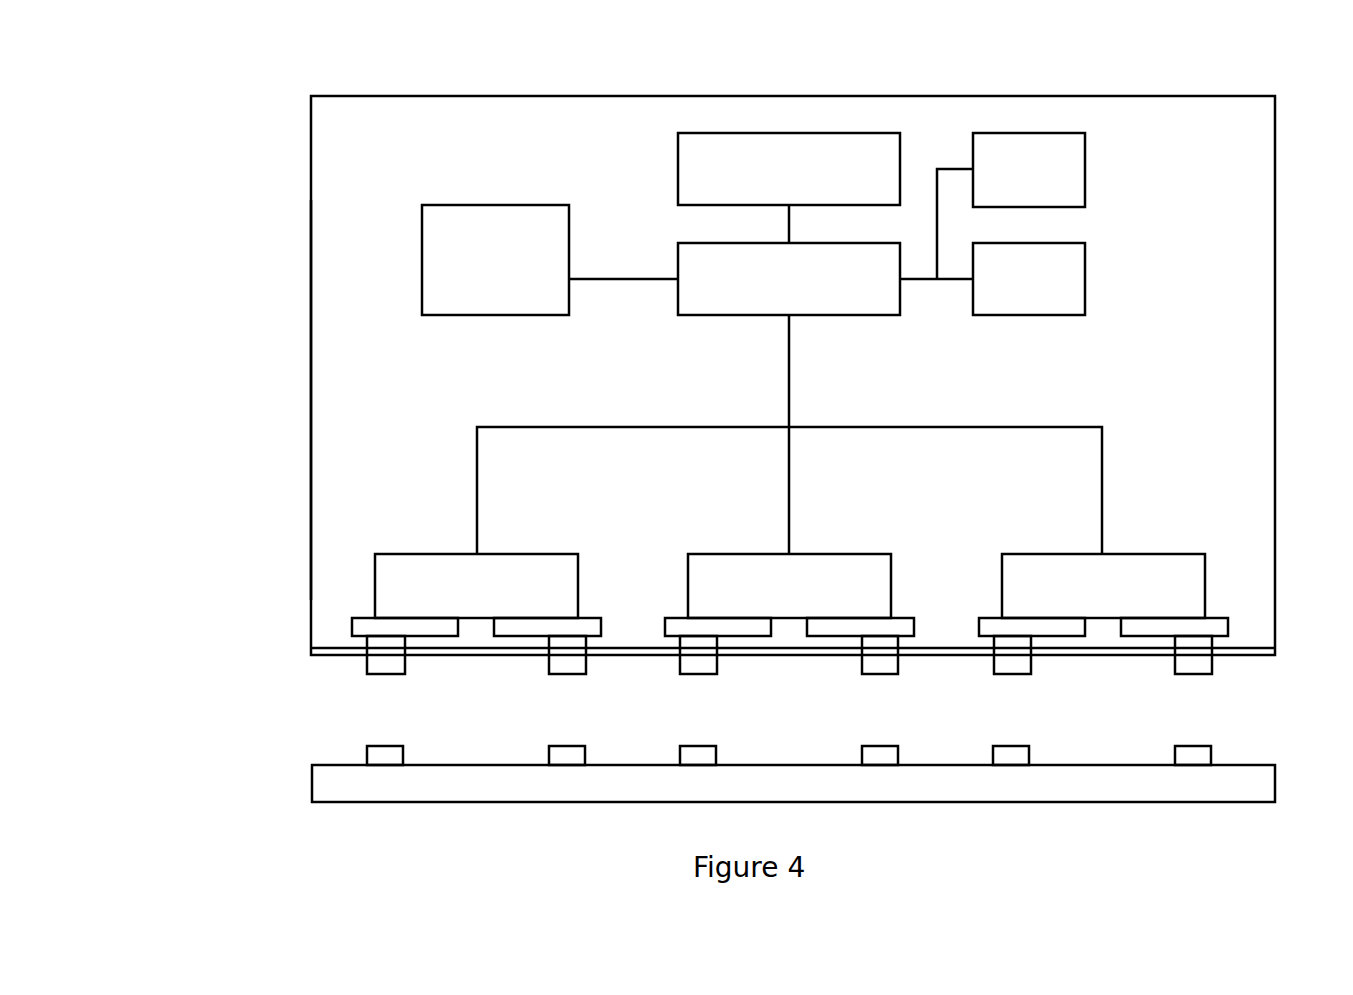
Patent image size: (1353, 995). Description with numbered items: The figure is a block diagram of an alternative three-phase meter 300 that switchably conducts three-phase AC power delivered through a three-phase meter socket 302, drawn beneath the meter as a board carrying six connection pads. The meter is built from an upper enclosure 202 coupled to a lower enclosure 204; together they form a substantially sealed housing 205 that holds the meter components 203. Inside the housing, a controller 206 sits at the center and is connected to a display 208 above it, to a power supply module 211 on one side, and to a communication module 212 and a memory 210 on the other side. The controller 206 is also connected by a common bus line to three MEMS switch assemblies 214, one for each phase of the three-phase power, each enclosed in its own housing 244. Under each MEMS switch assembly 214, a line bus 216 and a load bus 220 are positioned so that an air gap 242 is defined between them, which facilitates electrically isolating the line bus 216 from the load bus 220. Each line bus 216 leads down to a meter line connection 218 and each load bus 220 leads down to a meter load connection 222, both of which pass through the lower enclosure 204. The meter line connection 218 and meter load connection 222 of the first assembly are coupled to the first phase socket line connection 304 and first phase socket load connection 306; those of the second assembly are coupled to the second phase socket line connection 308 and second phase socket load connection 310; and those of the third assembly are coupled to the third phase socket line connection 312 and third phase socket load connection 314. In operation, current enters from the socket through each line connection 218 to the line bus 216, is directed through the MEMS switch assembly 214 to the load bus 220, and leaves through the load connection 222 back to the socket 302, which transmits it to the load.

The three-phase meter 300 is at (207, 62).
The meter components 203 is at (437, 108).
The upper enclosure 202 is at (311, 203).
The housing 205 is at (311, 372).
The lower enclosure 204 is at (311, 650).
The controller 206 is at (678, 243).
The display 208 is at (678, 170).
The memory 210 is at (1085, 283).
The power supply module 211 is at (422, 262).
The communication module 212 is at (1085, 170).
The MEMS switch assembly 214 is at (405, 554).
The housing 244 is at (540, 554).
The line bus 216 is at (360, 618).
The load bus 220 is at (595, 618).
The meter line connection 218 is at (385, 674).
The meter load connection 222 is at (567, 674).
The air gap 242 is at (474, 625).
The three-phase meter socket 302 is at (798, 803).
The first phase socket line connection 304 is at (403, 757).
The first phase socket load connection 306 is at (585, 757).
The second phase socket line connection 308 is at (716, 757).
The second phase socket load connection 310 is at (898, 757).
The third phase socket line connection 312 is at (1029, 757).
The third phase socket load connection 314 is at (1211, 757).